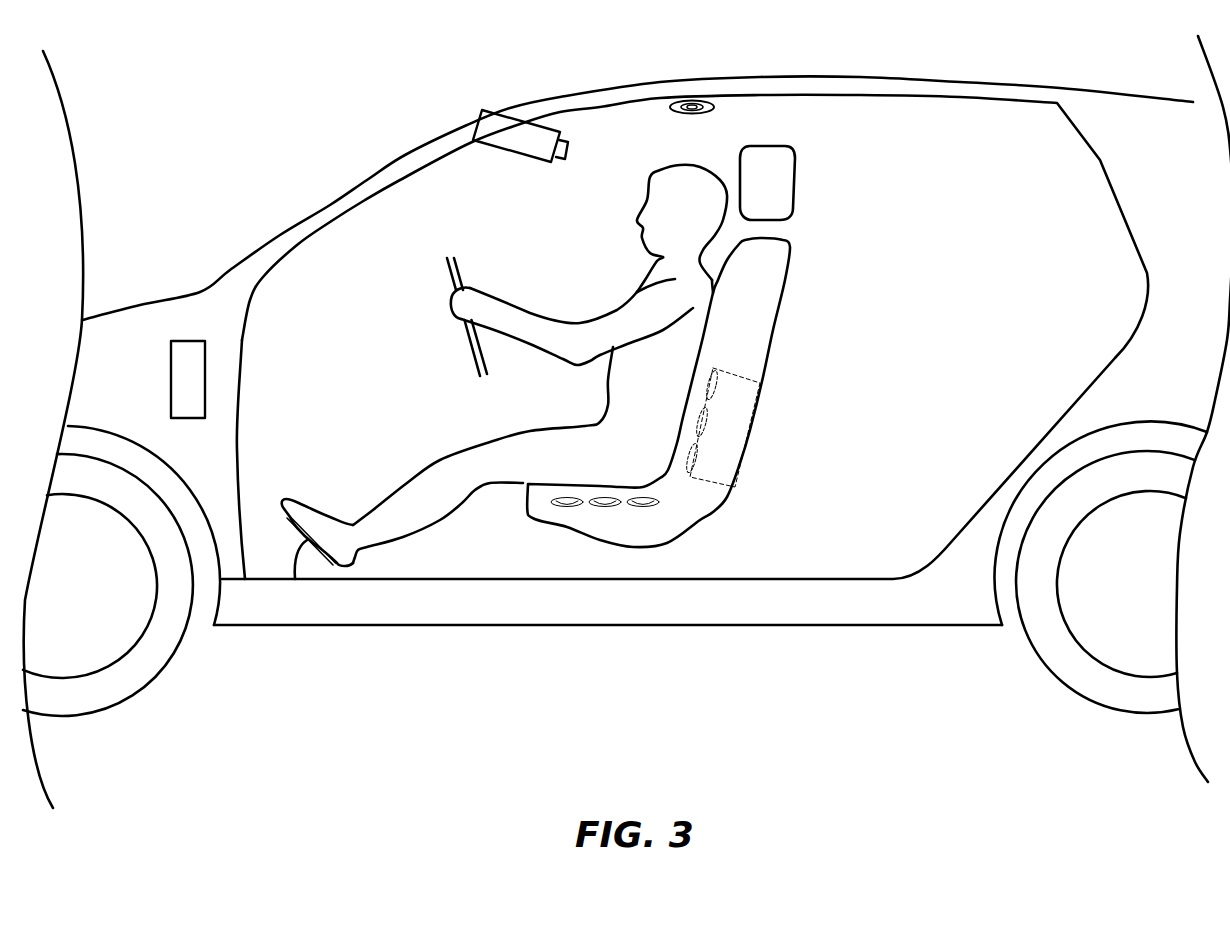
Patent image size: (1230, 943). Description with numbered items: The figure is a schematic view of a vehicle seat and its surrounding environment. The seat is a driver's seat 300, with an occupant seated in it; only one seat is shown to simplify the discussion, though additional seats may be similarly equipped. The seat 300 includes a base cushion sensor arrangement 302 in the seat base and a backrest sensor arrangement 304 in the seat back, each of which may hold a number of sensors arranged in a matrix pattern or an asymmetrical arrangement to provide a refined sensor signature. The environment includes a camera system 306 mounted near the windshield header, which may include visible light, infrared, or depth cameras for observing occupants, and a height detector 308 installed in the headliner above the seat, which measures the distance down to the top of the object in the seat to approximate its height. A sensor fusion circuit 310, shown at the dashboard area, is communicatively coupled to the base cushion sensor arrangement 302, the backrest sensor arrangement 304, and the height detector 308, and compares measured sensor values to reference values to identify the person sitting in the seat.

The driver's seat 300 is at (793, 253).
The base cushion sensor arrangement 302 is at (667, 503).
The backrest sensor arrangement 304 is at (760, 385).
The camera system 306 is at (530, 162).
The height detector 308 is at (675, 112).
The sensor fusion circuit 310 is at (171, 368).